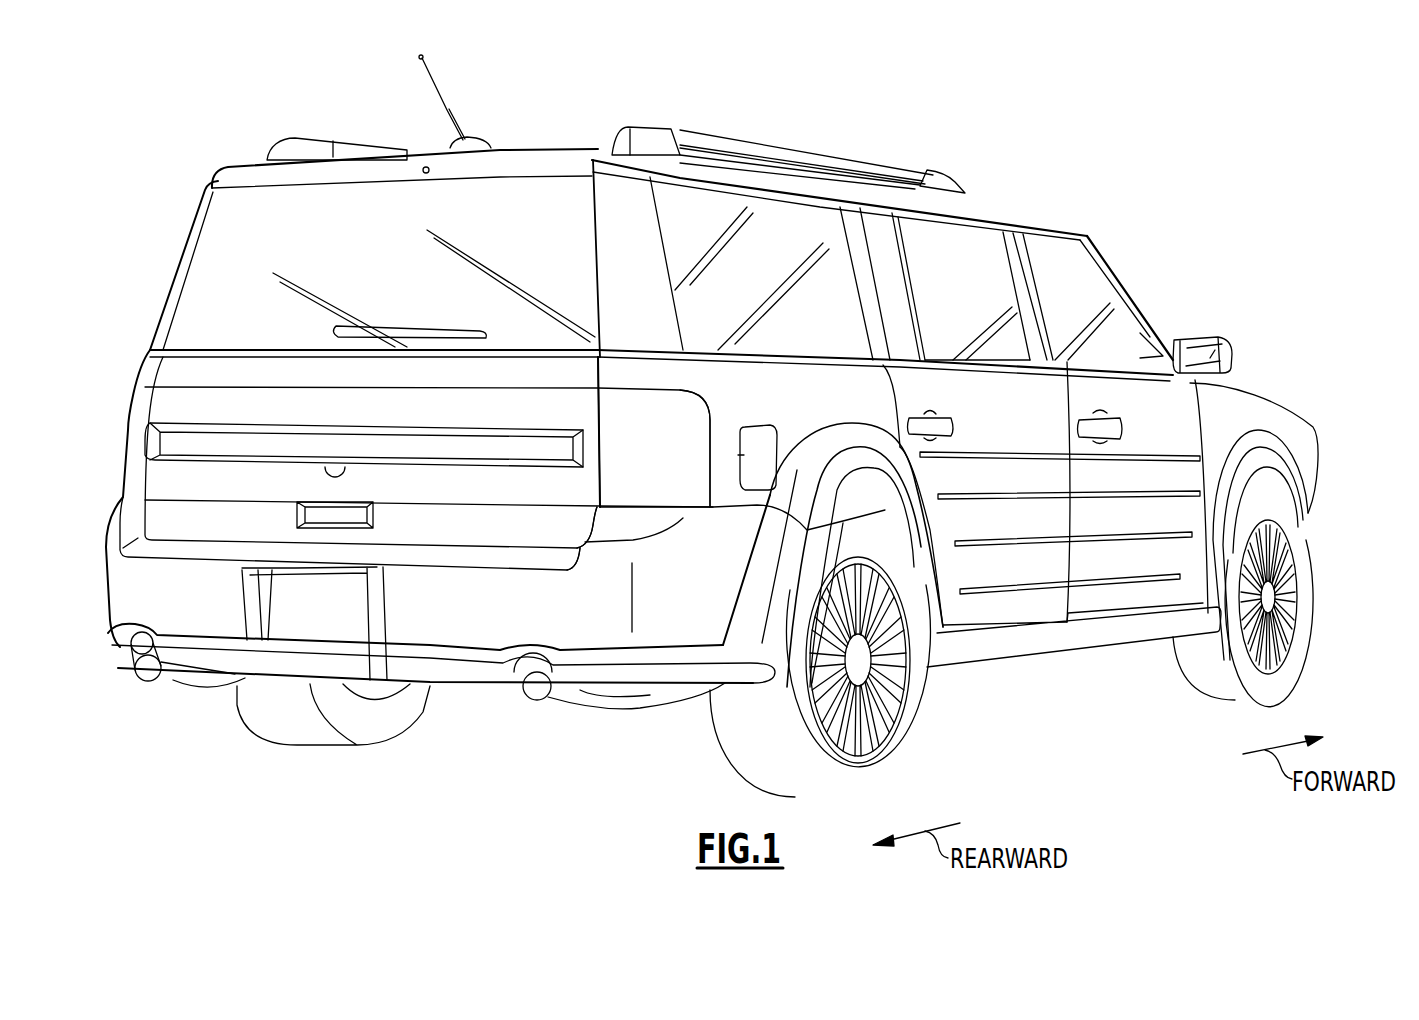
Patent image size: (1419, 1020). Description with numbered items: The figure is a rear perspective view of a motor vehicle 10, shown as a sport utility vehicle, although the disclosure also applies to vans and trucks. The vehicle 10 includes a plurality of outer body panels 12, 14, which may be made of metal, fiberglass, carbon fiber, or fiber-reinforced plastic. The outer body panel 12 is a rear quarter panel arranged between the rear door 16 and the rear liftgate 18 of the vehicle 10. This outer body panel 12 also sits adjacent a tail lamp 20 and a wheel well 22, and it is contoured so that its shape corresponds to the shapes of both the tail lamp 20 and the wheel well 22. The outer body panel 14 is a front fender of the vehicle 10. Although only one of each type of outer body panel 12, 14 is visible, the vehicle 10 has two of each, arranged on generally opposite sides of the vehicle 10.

The motor vehicle 10 is at (1143, 194).
The outer body panel 12 is at (805, 378).
The outer body panel 14 is at (1262, 411).
The rear door 16 is at (1025, 408).
The rear liftgate 18 is at (255, 388).
The tail lamp 20 is at (637, 490).
The wheel well 22 is at (872, 513).